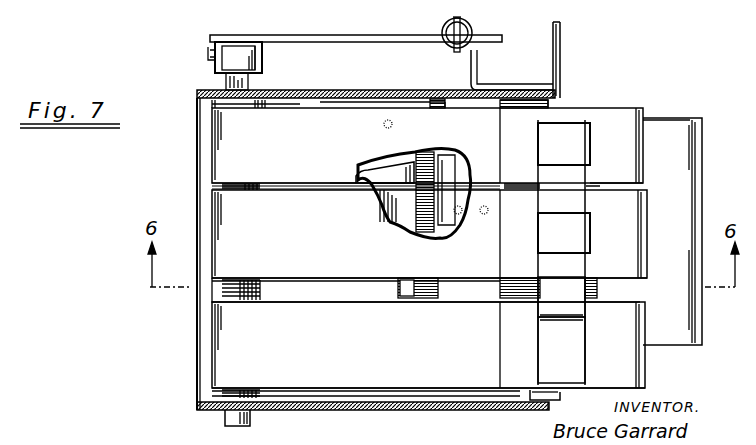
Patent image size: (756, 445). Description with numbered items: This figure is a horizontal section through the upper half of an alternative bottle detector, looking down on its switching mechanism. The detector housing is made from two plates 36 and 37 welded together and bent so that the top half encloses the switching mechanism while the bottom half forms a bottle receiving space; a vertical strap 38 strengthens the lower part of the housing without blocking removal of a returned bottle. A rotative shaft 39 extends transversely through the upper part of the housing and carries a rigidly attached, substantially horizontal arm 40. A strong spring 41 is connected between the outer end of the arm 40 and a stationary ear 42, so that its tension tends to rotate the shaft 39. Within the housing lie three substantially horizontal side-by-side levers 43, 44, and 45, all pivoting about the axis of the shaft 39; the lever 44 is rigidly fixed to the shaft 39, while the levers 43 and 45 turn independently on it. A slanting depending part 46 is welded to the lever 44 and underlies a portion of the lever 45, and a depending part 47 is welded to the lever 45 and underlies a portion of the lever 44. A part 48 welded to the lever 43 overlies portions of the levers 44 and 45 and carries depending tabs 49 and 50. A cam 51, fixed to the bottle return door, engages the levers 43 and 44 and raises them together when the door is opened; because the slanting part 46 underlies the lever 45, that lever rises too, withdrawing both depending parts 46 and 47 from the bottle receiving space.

The plate 36 is at (400, 412).
The plate 37 is at (366, 91).
The vertical strap 38 is at (572, 396).
The rotative shaft 39 is at (234, 426).
The horizontal arm 40 is at (370, 43).
The spring 41 is at (453, 50).
The stationary ear 42 is at (478, 76).
The lever 43 is at (222, 352).
The lever 44 is at (222, 240).
The lever 45 is at (212, 149).
The slanting depending part 46 is at (455, 185).
The depending part 47 is at (392, 166).
The part 48 is at (572, 290).
The depending tab 49 is at (582, 234).
The depending tab 50 is at (582, 146).
The cam 51 is at (660, 338).